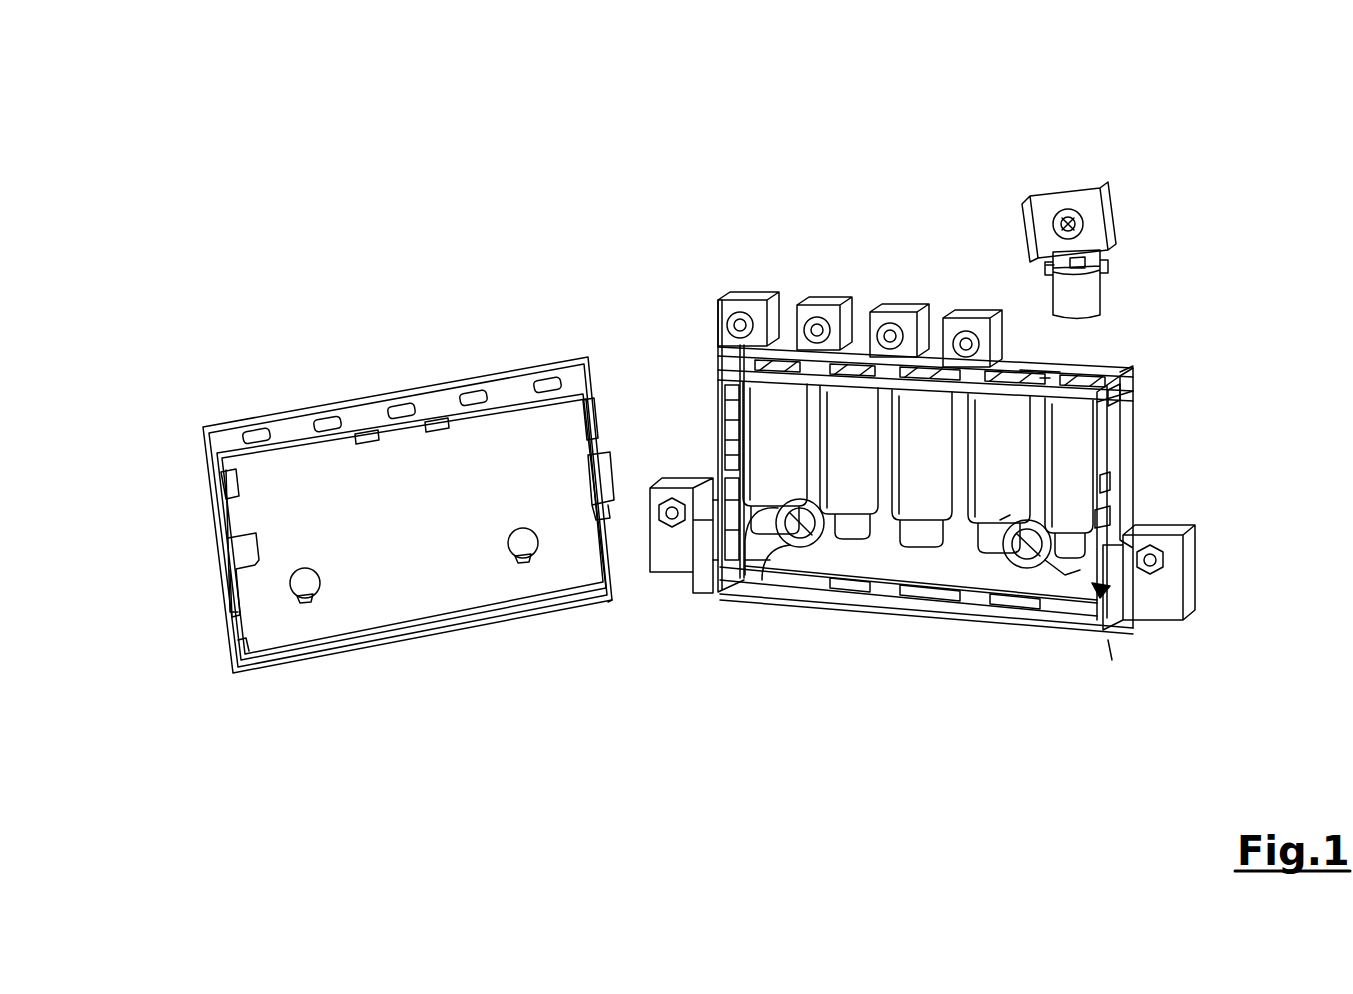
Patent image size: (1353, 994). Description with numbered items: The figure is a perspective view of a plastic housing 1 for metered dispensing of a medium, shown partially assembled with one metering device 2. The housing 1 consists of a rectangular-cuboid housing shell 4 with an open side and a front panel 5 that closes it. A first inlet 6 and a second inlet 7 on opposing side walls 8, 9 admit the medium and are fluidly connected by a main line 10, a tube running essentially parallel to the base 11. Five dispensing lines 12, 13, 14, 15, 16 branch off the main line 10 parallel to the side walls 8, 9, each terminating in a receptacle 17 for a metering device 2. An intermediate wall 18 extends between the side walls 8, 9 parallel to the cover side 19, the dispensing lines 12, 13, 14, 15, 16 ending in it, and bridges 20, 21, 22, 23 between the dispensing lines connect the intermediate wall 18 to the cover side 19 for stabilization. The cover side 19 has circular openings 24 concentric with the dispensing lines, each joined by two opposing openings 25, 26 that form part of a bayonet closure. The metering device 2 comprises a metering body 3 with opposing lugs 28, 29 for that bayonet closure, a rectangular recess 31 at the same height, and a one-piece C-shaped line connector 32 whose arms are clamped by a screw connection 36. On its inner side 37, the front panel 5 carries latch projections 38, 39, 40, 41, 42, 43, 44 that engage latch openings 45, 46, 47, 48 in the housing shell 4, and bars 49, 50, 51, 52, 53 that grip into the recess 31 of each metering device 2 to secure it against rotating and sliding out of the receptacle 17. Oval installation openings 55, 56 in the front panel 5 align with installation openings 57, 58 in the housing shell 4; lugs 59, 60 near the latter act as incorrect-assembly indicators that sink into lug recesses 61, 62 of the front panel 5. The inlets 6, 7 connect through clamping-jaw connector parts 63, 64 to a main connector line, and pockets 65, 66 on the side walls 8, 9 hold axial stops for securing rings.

The housing 1 is at (600, 345).
The metering device 2 is at (1110, 200).
The metering body 3 is at (1100, 300).
The housing shell 4 is at (1166, 455).
The front panel 5 is at (355, 340).
The first inlet 6 is at (727, 592).
The second inlet 7 is at (1125, 625).
The side wall 8 is at (730, 490).
The side wall 9 is at (1135, 480).
The main line 10 is at (905, 580).
The base 11 is at (825, 588).
The dispensing line 12 is at (775, 458).
The dispensing line 13 is at (849, 462).
The dispensing line 14 is at (922, 468).
The dispensing line 15 is at (999, 473).
The dispensing line 16 is at (1069, 478).
The receptacle 17 is at (1032, 376).
The intermediate wall 18 is at (1117, 440).
The cover side 19 is at (1133, 370).
The bridge 20 is at (768, 298).
The bridge 21 is at (830, 303).
The bridge 22 is at (890, 310).
The bridge 23 is at (1135, 420).
The opening 24 is at (960, 316).
The opening 25 is at (1042, 360).
The opening 26 is at (1125, 405).
The lug 28 is at (1048, 265).
The lug 29 is at (1112, 235).
The recess 31 is at (1115, 210).
The line connector 32 is at (1112, 190).
The screw connection 36 is at (1095, 187).
The inner side 37 is at (412, 538).
The latch projection 38 is at (436, 628).
The latch projection 39 is at (238, 548).
The latch projection 40 is at (604, 482).
The latch projection 41 is at (210, 483).
The latch projection 42 is at (604, 415).
The latch projection 43 is at (372, 438).
The latch projection 44 is at (440, 426).
The latch opening 45 is at (930, 600).
The latch opening 46 is at (722, 385).
The latch opening 47 is at (1125, 520).
The latch opening 48 is at (728, 468).
The bar 49 is at (252, 428).
The bar 50 is at (325, 415).
The bar 51 is at (400, 404).
The bar 52 is at (474, 392).
The bar 53 is at (555, 380).
The installation opening 55 is at (522, 545).
The installation opening 56 is at (305, 585).
The installation opening 57 is at (798, 525).
The installation opening 58 is at (1052, 563).
The lug 59 is at (812, 545).
The lug 60 is at (1022, 548).
The lug recess 61 is at (306, 602).
The lug recess 62 is at (526, 560).
The connector part 63 is at (665, 560).
The connector part 64 is at (1185, 615).
The pocket 65 is at (1130, 632).
The pocket 66 is at (712, 580).